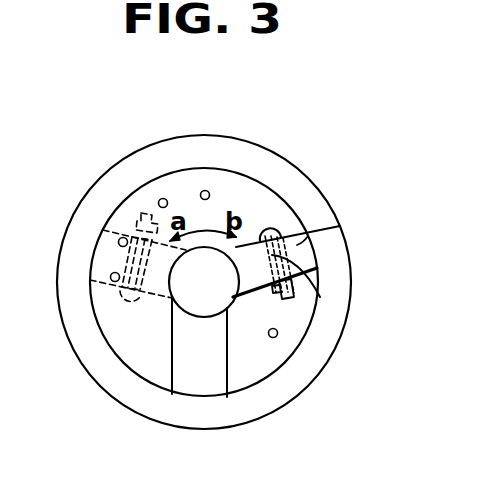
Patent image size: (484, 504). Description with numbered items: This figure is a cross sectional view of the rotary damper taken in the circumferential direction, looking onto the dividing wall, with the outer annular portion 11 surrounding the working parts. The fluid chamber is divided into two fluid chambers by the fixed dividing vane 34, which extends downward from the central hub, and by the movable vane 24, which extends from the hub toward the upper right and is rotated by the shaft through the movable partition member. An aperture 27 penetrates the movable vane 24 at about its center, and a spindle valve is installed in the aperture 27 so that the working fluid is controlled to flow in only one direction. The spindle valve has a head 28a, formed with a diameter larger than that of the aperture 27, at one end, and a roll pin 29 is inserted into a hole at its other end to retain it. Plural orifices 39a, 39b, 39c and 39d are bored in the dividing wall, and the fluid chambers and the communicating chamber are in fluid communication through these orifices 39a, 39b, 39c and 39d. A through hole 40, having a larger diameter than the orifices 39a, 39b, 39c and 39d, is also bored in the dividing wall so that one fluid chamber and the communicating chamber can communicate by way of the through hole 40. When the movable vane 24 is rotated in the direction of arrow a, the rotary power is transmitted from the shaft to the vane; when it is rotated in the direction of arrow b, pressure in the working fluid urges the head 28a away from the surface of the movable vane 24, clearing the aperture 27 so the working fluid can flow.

The annular ring plate 11 is at (343, 258).
The movable vane 24 is at (338, 227).
The aperture 27 is at (322, 297).
The head 28a is at (263, 228).
The roll pin 29 is at (278, 290).
The dividing vane 34 is at (200, 385).
The orifice 39a is at (206, 190).
The orifice 39b is at (162, 198).
The orifice 39c is at (118, 242).
The orifice 39d is at (110, 277).
The through hole 40 is at (272, 338).